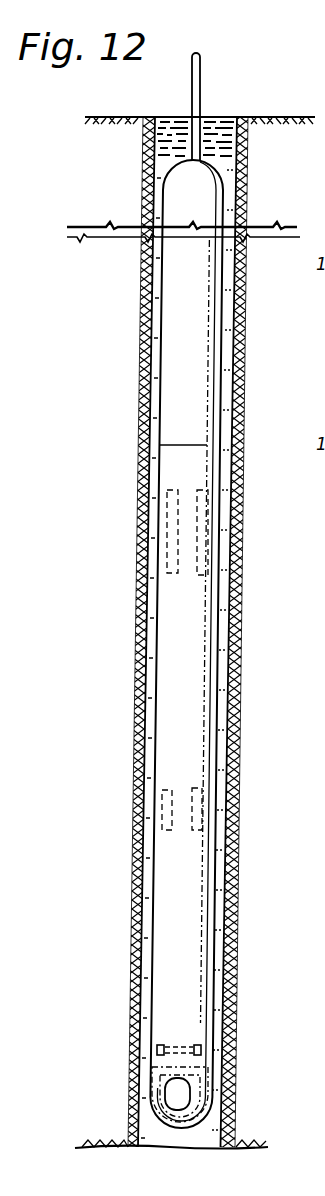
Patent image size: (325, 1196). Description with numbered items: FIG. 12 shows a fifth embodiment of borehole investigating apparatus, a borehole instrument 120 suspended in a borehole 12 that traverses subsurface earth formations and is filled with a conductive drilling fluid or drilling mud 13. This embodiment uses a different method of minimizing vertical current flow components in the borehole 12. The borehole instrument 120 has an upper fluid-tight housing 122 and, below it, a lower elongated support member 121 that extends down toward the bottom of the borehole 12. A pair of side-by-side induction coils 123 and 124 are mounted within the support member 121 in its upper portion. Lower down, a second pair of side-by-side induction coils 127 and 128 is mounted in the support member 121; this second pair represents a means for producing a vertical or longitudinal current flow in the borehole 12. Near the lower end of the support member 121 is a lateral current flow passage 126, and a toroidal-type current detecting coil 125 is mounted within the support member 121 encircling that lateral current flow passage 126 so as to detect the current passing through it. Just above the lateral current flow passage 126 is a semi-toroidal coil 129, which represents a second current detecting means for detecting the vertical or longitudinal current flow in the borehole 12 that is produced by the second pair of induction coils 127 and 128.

The borehole 12 is at (152, 283).
The drilling fluid 13 is at (156, 134).
The borehole instrument 120 is at (155, 644).
The lower elongated support member 121 is at (165, 907).
The upper fluid-tight housing 122 is at (175, 345).
The induction coil 123 is at (165, 505).
The induction coil 124 is at (205, 529).
The toroidal-type current detecting coil 125 is at (160, 1070).
The lateral current flow passage 126 is at (170, 1098).
The induction coil 127 is at (160, 802).
The induction coil 128 is at (207, 803).
The semi-toroidal coil 129 is at (197, 1044).